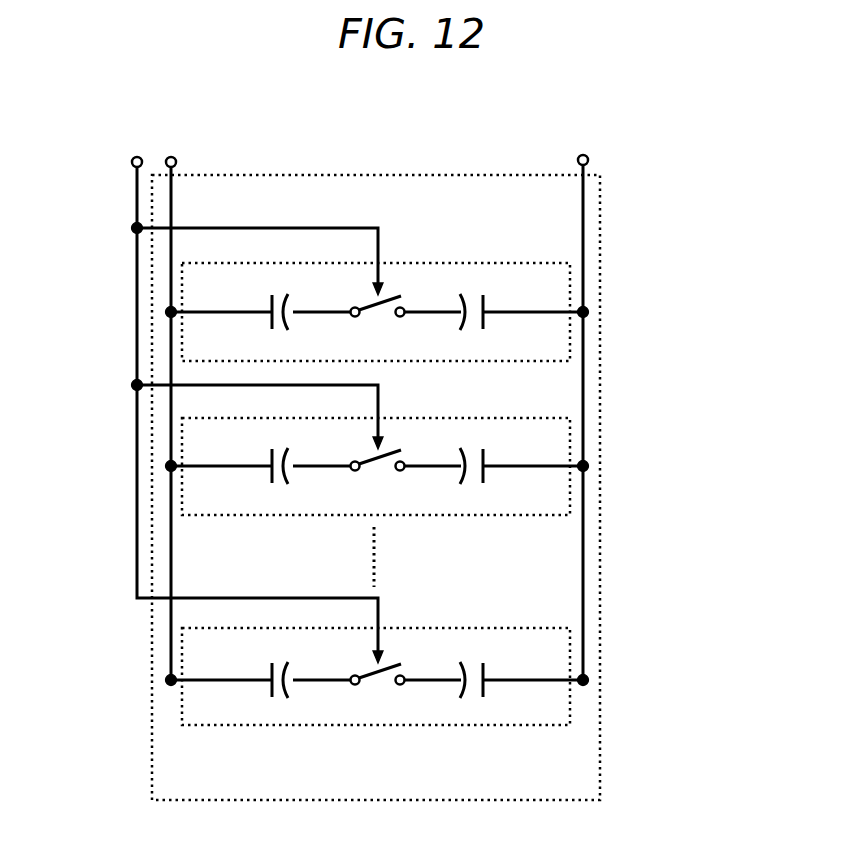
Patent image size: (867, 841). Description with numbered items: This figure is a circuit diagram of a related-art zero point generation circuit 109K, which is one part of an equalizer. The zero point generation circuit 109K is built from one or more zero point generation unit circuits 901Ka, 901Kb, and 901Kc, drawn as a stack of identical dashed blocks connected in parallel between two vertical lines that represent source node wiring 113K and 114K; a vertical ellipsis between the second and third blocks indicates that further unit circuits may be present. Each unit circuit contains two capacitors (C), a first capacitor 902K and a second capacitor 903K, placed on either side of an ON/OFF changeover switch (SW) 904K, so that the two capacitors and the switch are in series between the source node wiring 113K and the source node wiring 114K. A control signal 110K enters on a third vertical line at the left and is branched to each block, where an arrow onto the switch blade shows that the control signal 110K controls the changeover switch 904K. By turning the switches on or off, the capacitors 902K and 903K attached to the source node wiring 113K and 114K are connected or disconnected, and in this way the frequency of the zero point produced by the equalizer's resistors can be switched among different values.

The zero point generation circuit 109K is at (415, 125).
The control signal 110K is at (137, 156).
The source node wiring 113K is at (172, 156).
The source node wiring 114K is at (583, 154).
The zero point generation unit circuit 901Ka is at (460, 272).
The zero point generation unit circuit 901Kb is at (563, 445).
The zero point generation unit circuit 901Kc is at (563, 656).
The capacitor 902K is at (280, 296).
The capacitor 903K is at (475, 296).
The ON/OFF changeover switch 904K is at (383, 304).